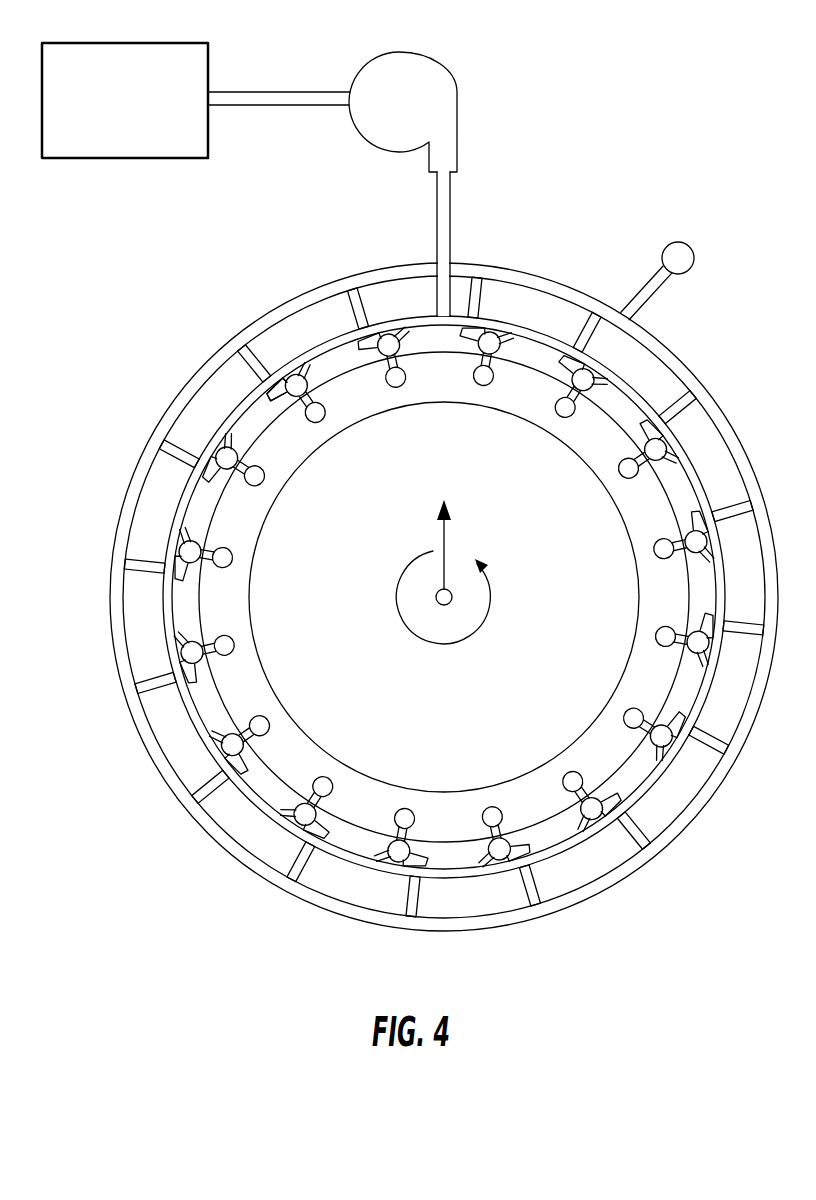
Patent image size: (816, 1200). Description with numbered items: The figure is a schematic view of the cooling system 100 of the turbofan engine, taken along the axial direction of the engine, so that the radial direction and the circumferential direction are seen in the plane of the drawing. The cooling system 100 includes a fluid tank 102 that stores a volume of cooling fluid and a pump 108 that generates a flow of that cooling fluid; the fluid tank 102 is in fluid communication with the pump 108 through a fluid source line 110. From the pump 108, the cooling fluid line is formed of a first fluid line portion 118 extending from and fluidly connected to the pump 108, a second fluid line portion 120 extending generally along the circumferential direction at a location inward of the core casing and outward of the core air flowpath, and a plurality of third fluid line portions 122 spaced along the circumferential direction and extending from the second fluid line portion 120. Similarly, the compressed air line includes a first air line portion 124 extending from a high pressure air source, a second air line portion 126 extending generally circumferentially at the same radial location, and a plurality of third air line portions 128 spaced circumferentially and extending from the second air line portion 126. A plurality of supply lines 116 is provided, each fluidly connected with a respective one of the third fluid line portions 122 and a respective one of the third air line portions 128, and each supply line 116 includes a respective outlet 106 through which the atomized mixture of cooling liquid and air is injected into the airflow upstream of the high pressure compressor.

The cooling system 100 is at (410, 470).
The fluid tank 102 is at (145, 112).
The outlet 106 is at (228, 560).
The pump 108 is at (419, 72).
The fluid source line 110 is at (289, 91).
The supply line 116 is at (300, 403).
The first fluid line portion 118 is at (436, 200).
The second fluid line portion 120 is at (637, 393).
The third fluid line portion 122 is at (303, 373).
The first air line portion 124 is at (643, 282).
The second air line portion 126 is at (120, 480).
The third air line portion 128 is at (267, 358).